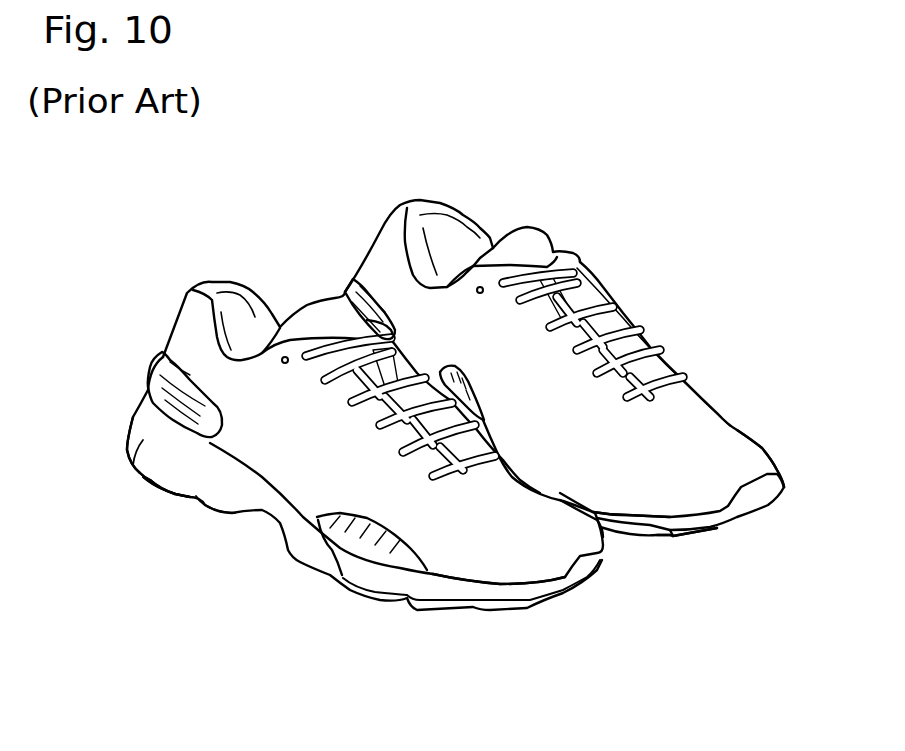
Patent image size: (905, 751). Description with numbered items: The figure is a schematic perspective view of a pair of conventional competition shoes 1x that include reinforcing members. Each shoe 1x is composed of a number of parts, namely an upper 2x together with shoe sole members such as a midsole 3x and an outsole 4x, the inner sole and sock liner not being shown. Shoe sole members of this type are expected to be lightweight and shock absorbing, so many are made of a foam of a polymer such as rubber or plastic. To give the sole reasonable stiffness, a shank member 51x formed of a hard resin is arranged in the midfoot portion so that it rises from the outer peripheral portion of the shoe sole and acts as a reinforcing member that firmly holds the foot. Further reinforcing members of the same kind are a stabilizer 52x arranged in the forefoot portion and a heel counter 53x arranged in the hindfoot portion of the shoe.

The shoe 1x is at (557, 188).
The upper 2x is at (497, 563).
The midsole 3x is at (148, 440).
The outsole 4x is at (160, 490).
The shank member 51x is at (470, 407).
The stabilizer 52x is at (347, 547).
The heel counter 53x is at (150, 357).